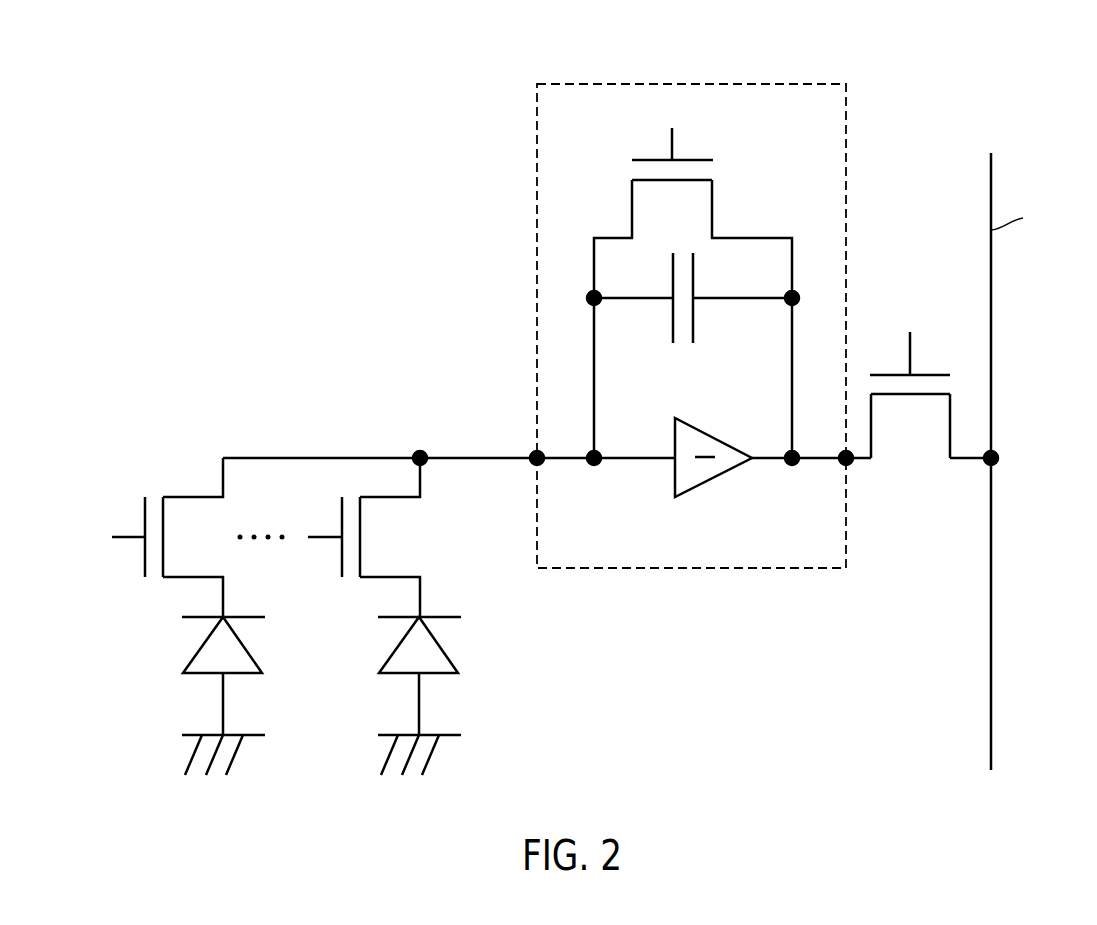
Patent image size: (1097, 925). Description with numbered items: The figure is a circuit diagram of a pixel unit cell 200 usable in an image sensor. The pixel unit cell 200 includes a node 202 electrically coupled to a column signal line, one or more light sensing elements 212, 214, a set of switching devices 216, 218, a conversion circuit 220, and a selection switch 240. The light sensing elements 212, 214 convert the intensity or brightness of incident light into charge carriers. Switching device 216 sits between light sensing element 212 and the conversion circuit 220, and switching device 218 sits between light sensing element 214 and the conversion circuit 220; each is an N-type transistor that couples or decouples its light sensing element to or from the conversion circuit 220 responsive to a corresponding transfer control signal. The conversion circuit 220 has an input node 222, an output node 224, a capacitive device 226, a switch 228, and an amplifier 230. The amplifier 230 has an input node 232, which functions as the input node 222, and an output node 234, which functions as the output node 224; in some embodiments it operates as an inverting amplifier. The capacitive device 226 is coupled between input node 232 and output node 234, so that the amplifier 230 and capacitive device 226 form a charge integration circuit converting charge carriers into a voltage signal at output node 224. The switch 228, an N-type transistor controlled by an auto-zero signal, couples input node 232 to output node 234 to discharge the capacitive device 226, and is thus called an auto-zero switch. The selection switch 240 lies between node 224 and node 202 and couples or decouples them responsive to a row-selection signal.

The pixel unit cell 200 is at (1018, 97).
The node 202 is at (1000, 453).
The light sensing element 212 is at (200, 650).
The light sensing element 214 is at (445, 650).
The switching device 216 is at (163, 579).
The switching device 218 is at (405, 546).
The conversion circuit 220 is at (686, 573).
The input node 222 is at (533, 465).
The output node 224 is at (850, 466).
The capacitive device 226 is at (694, 322).
The switch 228 is at (714, 205).
The amplifier 230 is at (712, 480).
The input node 232 is at (591, 468).
The output node 234 is at (796, 470).
The selection switch 240 is at (910, 457).